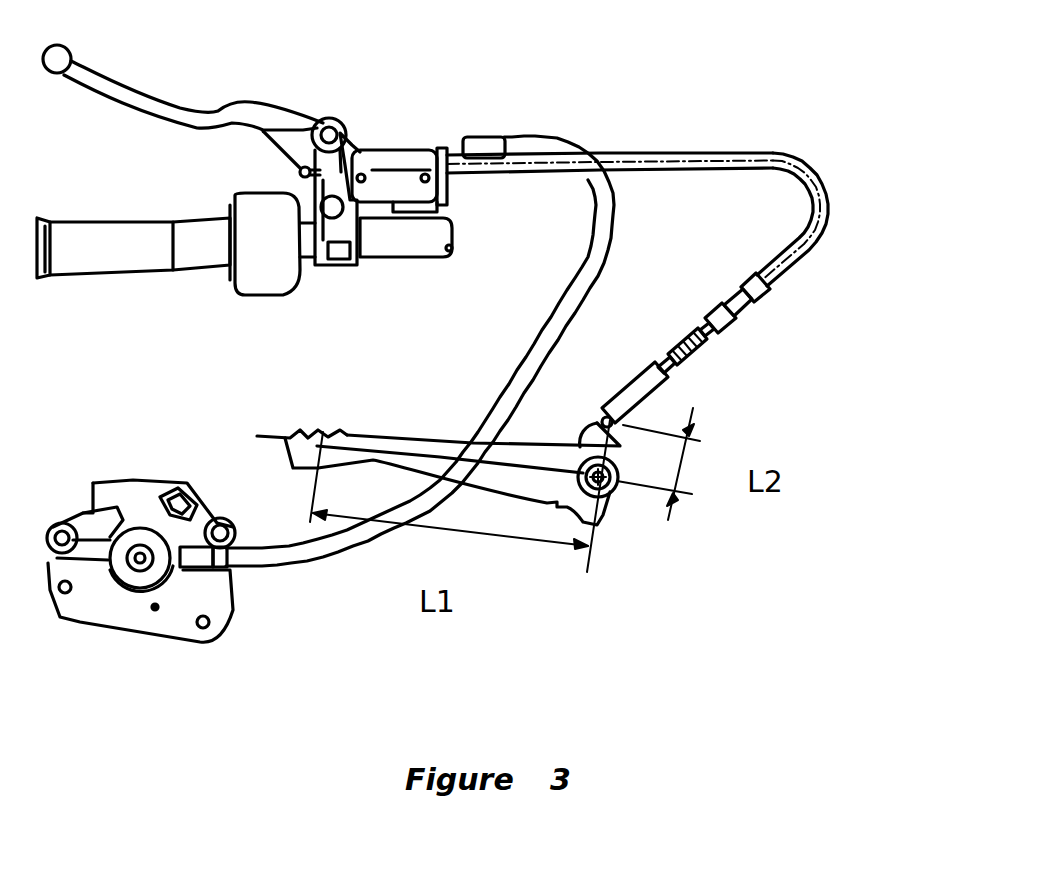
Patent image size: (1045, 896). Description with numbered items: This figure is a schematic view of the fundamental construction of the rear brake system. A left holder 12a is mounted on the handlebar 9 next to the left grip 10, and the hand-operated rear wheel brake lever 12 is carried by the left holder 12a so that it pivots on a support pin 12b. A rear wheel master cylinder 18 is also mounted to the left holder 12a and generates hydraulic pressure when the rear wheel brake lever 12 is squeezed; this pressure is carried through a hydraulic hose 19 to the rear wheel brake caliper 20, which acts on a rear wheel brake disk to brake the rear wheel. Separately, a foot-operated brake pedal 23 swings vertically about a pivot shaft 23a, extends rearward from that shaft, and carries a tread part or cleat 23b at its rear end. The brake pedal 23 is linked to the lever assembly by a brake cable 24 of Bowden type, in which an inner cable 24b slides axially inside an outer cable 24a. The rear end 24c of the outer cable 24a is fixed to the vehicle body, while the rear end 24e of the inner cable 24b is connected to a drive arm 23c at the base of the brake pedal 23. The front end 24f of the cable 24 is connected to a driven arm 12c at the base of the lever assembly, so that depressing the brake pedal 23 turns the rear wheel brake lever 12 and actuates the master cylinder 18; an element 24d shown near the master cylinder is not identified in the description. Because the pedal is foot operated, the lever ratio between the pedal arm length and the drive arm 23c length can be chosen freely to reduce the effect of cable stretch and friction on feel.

The handlebar 9 is at (400, 262).
The left grip 10 is at (118, 262).
The rear wheel brake lever 12 is at (137, 105).
The left holder 12a is at (338, 268).
The support pin 12b is at (332, 117).
The driven arm 12c is at (299, 170).
The rear wheel master cylinder 18 is at (393, 144).
The hydraulic hose 19 is at (585, 293).
The left rear wheel brake caliper 20 is at (133, 480).
The brake pedal 23 is at (431, 486).
The pivot shaft 23a is at (612, 492).
The tread part 23b is at (312, 436).
The drive arm 23c is at (581, 427).
The brake cable 24 is at (697, 173).
The outer cable 24a is at (830, 210).
The inner cable 24b is at (688, 150).
The rear end of outer cable 24c is at (725, 337).
The cable holder bracket 24d is at (450, 177).
The rear end of inner cable 24e is at (657, 395).
The front end of cable 24f is at (360, 142).